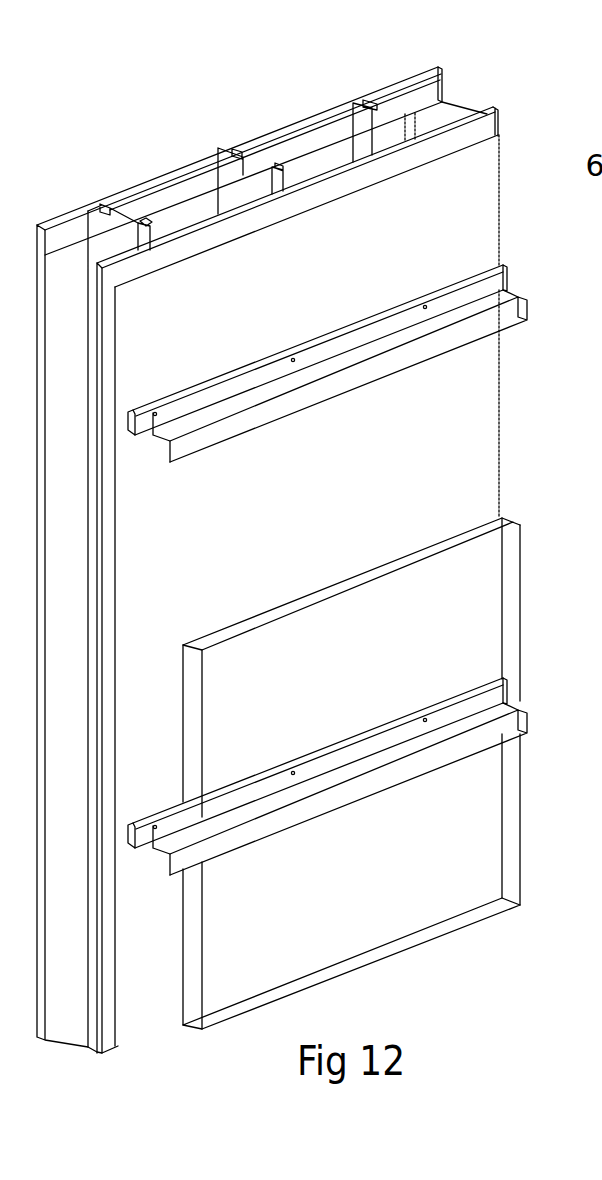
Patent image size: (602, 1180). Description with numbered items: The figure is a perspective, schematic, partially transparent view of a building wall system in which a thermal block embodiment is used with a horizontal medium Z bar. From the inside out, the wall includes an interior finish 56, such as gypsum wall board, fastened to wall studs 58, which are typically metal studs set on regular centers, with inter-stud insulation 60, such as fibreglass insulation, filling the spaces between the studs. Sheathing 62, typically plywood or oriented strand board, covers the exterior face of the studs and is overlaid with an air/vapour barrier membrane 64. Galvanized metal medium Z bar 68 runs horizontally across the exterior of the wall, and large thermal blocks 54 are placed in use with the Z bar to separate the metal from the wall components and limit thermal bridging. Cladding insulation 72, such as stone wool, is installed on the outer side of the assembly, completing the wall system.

The large thermal block 54 is at (488, 268).
The interior finish 56 is at (143, 178).
The wall stud 58 is at (247, 177).
The inter-stud insulation 60 is at (320, 168).
The sheathing 62 is at (363, 173).
The air/vapour barrier membrane 64 is at (433, 200).
The medium Z bar 68 is at (508, 297).
The cladding insulation 72 is at (512, 887).